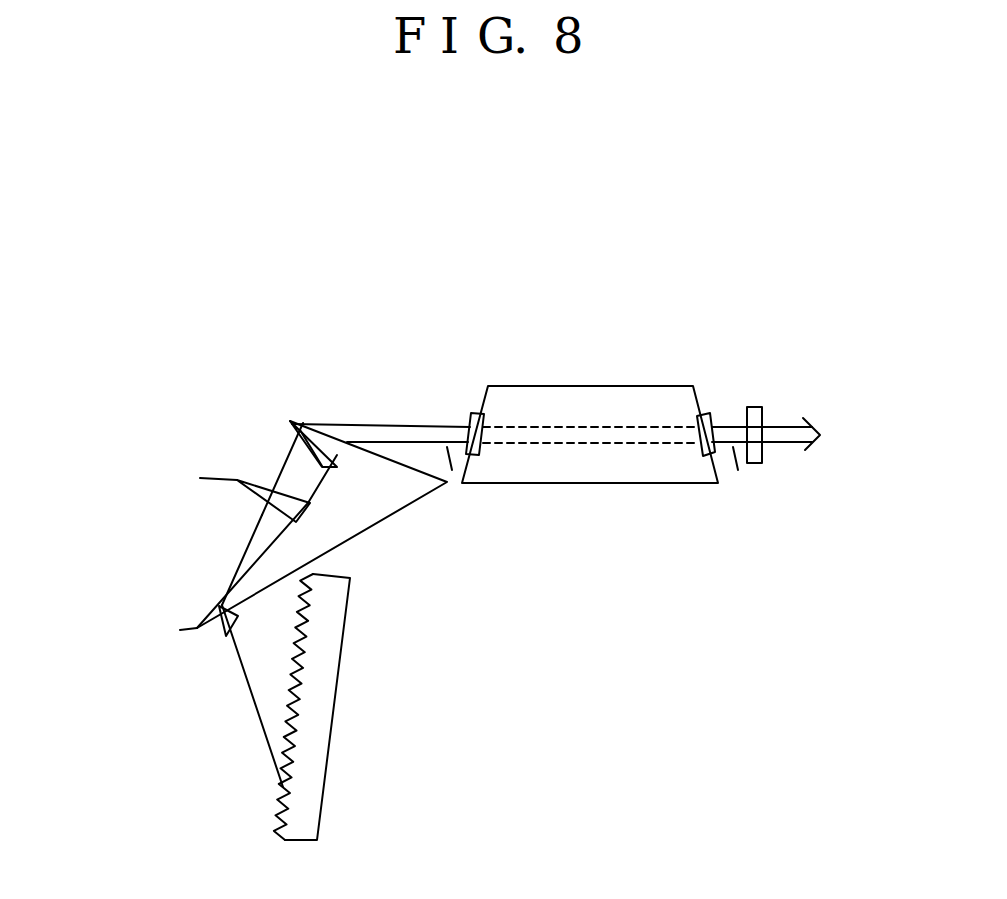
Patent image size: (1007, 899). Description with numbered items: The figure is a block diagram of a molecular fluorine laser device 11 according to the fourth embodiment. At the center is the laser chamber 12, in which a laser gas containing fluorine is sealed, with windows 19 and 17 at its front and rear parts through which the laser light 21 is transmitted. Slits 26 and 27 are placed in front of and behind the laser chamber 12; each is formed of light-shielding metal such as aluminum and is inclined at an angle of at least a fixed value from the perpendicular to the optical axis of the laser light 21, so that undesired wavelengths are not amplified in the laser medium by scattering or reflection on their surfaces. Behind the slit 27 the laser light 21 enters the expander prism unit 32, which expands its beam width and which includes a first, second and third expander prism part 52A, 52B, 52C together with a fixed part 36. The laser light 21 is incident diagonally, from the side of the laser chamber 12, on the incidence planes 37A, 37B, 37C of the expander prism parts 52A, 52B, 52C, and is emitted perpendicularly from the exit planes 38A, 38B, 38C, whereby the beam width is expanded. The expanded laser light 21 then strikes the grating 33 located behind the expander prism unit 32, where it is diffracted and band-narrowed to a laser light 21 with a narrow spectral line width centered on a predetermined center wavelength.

The molecular fluorine laser device 11 is at (780, 262).
The expander prism unit 32 is at (240, 360).
The laser light 21 is at (781, 443).
The laser chamber 12 is at (592, 386).
The window 19 is at (475, 456).
The window 17 is at (699, 457).
The slit 26 is at (722, 405).
The slit 27 is at (432, 397).
The fixed part 36 is at (386, 504).
The incidence plane 37A is at (329, 426).
The incidence plane 37B is at (272, 466).
The incidence plane 37C is at (250, 566).
The exit plane 38A is at (290, 441).
The exit plane 38B is at (265, 498).
The exit plane 38C is at (220, 602).
The first expander prism part 52A is at (302, 427).
The second expander prism part 52B is at (237, 480).
The third expander prism part 52C is at (198, 628).
The grating 33 is at (333, 725).